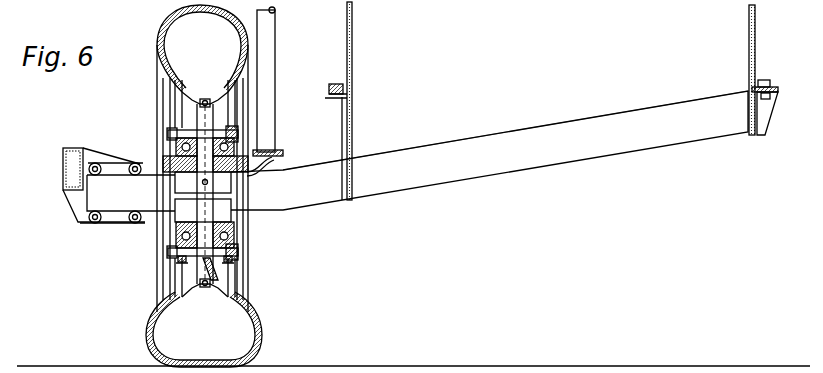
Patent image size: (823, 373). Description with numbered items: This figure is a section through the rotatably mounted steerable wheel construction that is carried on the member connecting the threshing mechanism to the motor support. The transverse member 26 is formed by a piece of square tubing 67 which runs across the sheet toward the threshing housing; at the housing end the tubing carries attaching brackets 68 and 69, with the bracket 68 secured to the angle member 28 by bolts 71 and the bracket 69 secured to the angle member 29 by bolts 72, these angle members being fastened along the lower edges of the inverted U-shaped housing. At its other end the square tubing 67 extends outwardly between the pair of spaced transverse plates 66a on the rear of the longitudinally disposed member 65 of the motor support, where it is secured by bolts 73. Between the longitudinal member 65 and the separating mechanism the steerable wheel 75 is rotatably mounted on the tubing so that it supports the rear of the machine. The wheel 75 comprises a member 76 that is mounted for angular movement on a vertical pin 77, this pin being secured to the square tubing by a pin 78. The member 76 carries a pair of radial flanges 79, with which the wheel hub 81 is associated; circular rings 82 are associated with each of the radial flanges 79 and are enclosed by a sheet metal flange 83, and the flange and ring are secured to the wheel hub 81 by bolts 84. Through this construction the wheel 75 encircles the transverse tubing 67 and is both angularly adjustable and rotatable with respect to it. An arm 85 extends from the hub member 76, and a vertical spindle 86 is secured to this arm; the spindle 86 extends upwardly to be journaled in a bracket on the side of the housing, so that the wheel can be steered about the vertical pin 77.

The transverse member 26 is at (481, 114).
The angle member 28 is at (752, 62).
The angle member 29 is at (348, 62).
The longitudinally disposed member 65 is at (68, 160).
The spaced plates 66a is at (96, 162).
The square tubing 67 is at (513, 143).
The attaching bracket 68 is at (762, 113).
The attaching bracket 69 is at (285, 170).
The bolts 71 is at (760, 82).
The bolts 72 is at (336, 84).
The bolts 73 is at (100, 224).
The steerable wheel 75 is at (157, 52).
The member 76 is at (240, 232).
The vertical pin 77 is at (205, 222).
The pin 78 is at (200, 182).
The radial flanges 79 is at (178, 233).
The wheel hub 81 is at (220, 274).
The circular rings 82 is at (178, 265).
The sheet metal flange 83 is at (176, 260).
The bolts 84 is at (198, 131).
The arm 85 is at (250, 163).
The vertical spindle 86 is at (272, 43).